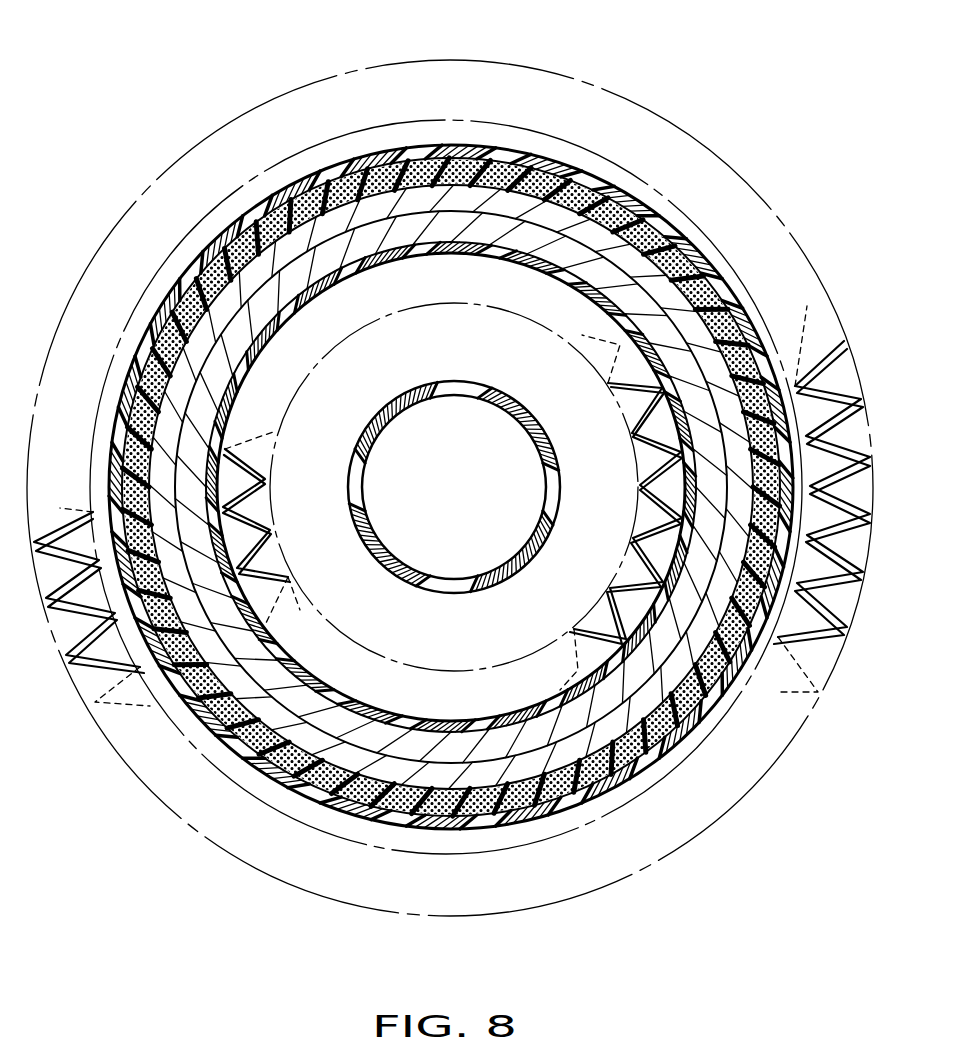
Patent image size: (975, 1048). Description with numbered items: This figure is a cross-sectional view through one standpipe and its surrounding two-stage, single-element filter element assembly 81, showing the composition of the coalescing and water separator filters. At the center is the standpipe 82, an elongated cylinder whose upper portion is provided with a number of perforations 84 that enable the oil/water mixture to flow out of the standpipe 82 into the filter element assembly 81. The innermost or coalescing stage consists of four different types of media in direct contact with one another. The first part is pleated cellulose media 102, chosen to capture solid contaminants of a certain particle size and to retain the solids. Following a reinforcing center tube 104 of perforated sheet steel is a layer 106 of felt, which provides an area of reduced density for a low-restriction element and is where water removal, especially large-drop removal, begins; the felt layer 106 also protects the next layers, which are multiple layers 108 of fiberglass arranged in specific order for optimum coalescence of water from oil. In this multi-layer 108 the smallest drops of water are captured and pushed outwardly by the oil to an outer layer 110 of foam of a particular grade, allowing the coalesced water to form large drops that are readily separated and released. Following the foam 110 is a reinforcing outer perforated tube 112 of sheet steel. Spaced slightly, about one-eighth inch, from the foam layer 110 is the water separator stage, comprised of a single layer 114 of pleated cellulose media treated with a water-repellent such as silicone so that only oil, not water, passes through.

The filter element assembly 81 is at (681, 105).
The standpipe 82 is at (493, 578).
The perforations 84 is at (352, 468).
The pleated cellulose media 102 is at (606, 580).
The reinforcing center tube 104 is at (567, 722).
The felt layer 106 is at (490, 742).
The multiple layers of fiberglass 108 is at (410, 782).
The outer layer of foam 110 is at (315, 737).
The reinforcing outer perforated tube 112 is at (248, 768).
The single layer of pleated cellulose media 114 is at (870, 578).